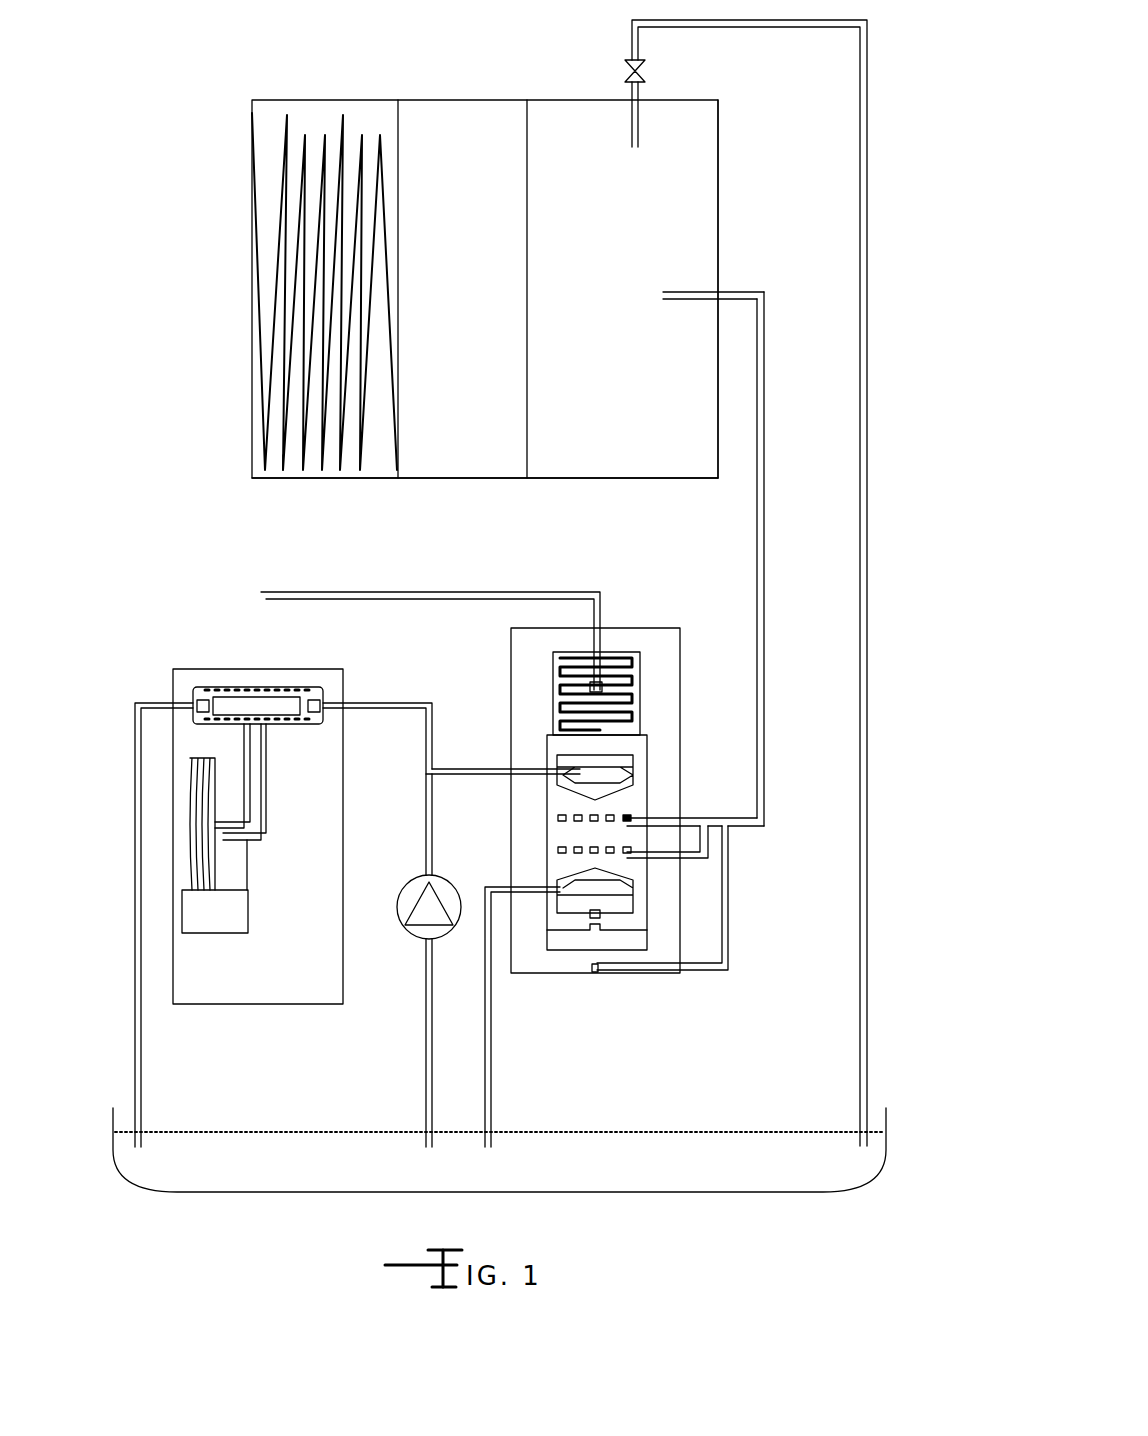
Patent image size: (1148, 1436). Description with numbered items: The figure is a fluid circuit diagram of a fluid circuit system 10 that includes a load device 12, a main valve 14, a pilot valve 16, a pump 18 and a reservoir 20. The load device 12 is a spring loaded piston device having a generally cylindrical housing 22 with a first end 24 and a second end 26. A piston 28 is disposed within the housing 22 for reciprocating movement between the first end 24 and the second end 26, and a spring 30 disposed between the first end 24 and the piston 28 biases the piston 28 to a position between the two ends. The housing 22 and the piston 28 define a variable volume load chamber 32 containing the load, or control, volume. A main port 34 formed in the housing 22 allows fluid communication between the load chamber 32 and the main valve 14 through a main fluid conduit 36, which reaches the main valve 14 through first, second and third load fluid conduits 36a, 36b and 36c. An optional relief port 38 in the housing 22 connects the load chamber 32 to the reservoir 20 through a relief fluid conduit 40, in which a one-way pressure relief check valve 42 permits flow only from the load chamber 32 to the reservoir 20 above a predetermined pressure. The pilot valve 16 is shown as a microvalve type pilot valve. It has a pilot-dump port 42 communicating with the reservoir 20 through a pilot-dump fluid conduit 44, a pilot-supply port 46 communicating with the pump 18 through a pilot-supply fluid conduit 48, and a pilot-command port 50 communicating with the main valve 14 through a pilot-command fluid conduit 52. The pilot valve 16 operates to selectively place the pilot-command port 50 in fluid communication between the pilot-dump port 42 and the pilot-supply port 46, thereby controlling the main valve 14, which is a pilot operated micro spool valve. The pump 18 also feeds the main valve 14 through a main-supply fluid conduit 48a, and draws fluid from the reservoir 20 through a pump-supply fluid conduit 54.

The fluid circuit system 10 is at (212, 258).
The load device 12 is at (475, 100).
The main valve 14 is at (628, 628).
The pilot valve 16 is at (222, 669).
The pump 18 is at (432, 875).
The reservoir 20 is at (867, 1170).
The housing 22 is at (655, 478).
The first end 24 is at (252, 425).
The second end 26 is at (718, 200).
The piston 28 is at (446, 443).
The spring 30 is at (303, 445).
The load chamber 32 is at (616, 249).
The main port 34 is at (720, 290).
The main fluid conduit 36 is at (768, 592).
The first load fluid conduit 36a is at (676, 815).
The second load fluid conduit 36b is at (662, 860).
The third load fluid conduit 36c is at (690, 975).
The relief port 38 is at (640, 100).
The relief fluid conduit 40 is at (868, 600).
The pressure relief check valve 42 is at (630, 64).
The pilot-dump fluid conduit 44 is at (135, 965).
The pilot-supply port 46 is at (310, 695).
The pilot-supply fluid conduit 48 is at (385, 700).
The main-supply fluid conduit 48a is at (447, 769).
The pilot-command port 50 is at (263, 700).
The pilot-command fluid conduit 52 is at (502, 592).
The pump-supply fluid conduit 54 is at (426, 1080).